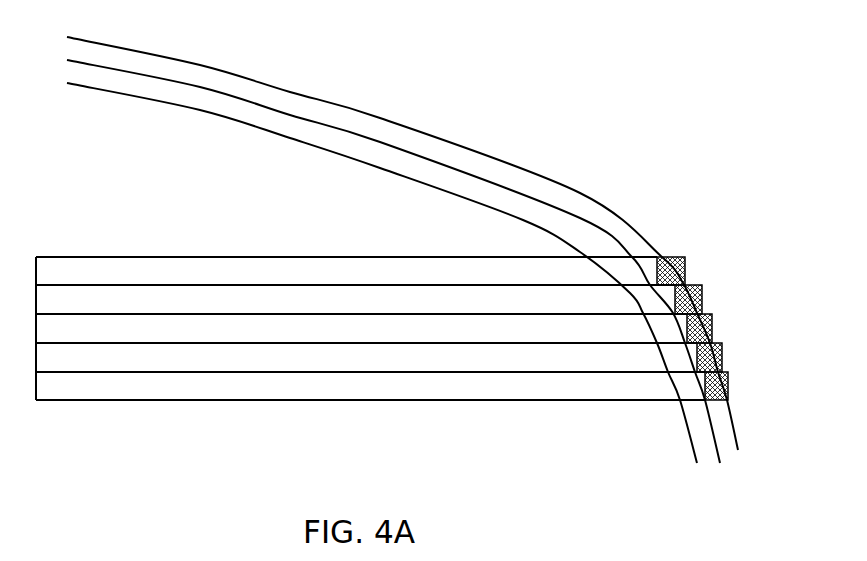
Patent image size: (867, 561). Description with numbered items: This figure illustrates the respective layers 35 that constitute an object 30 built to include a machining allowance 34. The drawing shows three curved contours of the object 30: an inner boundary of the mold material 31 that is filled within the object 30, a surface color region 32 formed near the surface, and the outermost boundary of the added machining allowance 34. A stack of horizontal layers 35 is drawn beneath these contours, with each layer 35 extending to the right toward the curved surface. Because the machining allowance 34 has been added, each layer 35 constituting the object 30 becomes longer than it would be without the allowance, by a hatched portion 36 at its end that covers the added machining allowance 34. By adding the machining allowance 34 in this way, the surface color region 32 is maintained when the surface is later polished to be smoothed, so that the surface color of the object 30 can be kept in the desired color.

The object 30 is at (543, 104).
The mold material 31 is at (213, 155).
The surface color region 32 is at (282, 125).
The machining allowance 34 is at (363, 120).
The layers 35 is at (91, 267).
The portion 36 is at (688, 268).